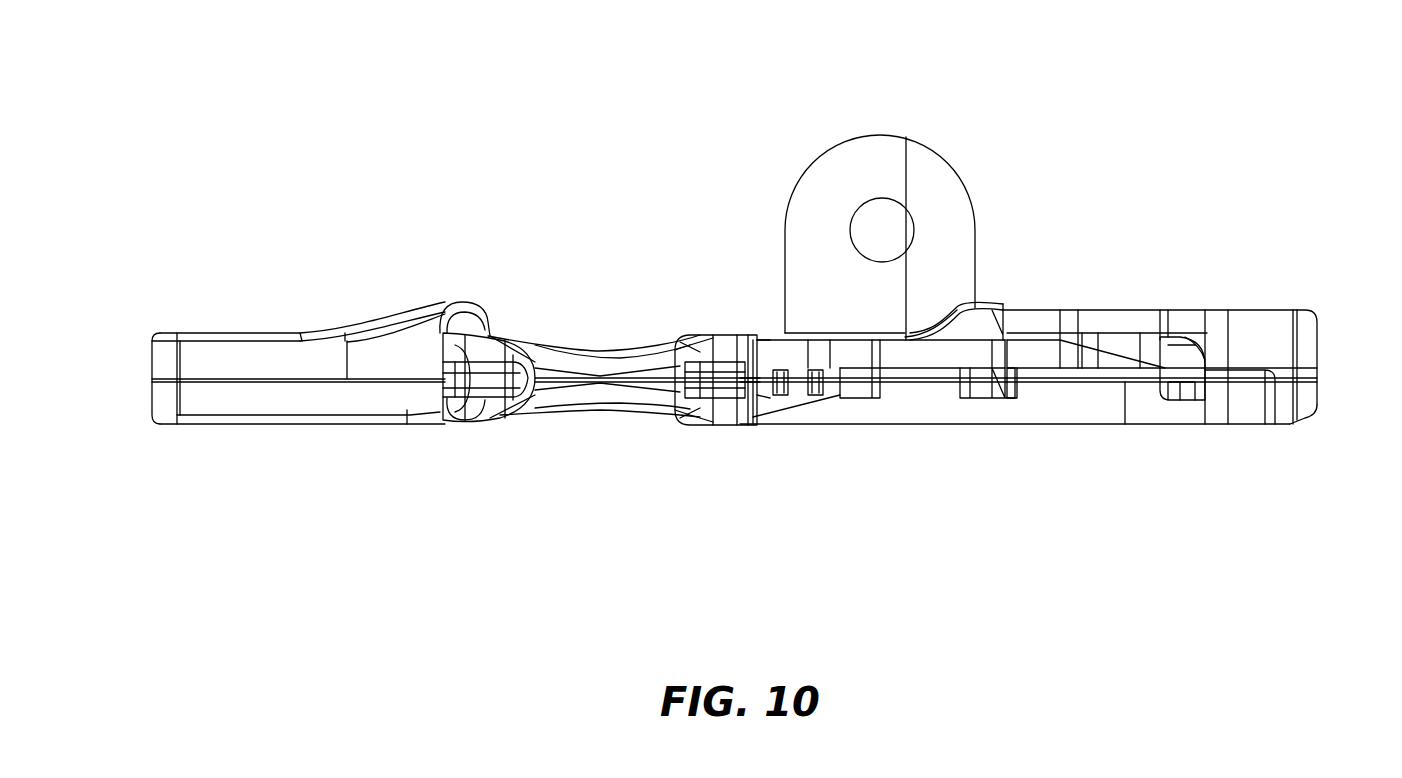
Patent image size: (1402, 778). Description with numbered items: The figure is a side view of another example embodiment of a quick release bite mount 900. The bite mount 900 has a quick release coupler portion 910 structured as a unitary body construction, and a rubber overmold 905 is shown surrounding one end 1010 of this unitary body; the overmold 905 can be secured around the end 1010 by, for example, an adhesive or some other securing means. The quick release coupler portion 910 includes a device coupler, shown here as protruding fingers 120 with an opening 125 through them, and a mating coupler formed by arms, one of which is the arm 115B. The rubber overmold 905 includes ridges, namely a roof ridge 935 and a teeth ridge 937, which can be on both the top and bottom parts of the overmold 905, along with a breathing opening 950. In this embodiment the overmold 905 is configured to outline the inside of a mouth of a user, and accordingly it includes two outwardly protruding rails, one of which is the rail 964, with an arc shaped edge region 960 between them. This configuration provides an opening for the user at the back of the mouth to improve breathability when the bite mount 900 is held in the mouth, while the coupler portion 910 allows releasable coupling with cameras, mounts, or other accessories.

The outwardly protruding rail 964 is at (189, 333).
The rubber overmold 905 is at (255, 333).
The arc shaped edge region 960 is at (252, 395).
The roof ridge 935 is at (458, 302).
The teeth ridge 937 is at (512, 340).
The breathing opening 950 is at (598, 365).
The end of the unitary body construction 1010 is at (722, 378).
The protruding fingers 120 is at (937, 153).
The opening 125 is at (884, 230).
The bite mount 900 is at (1055, 192).
The quick release coupler portion 910 is at (1100, 308).
The arm 115B is at (1285, 420).